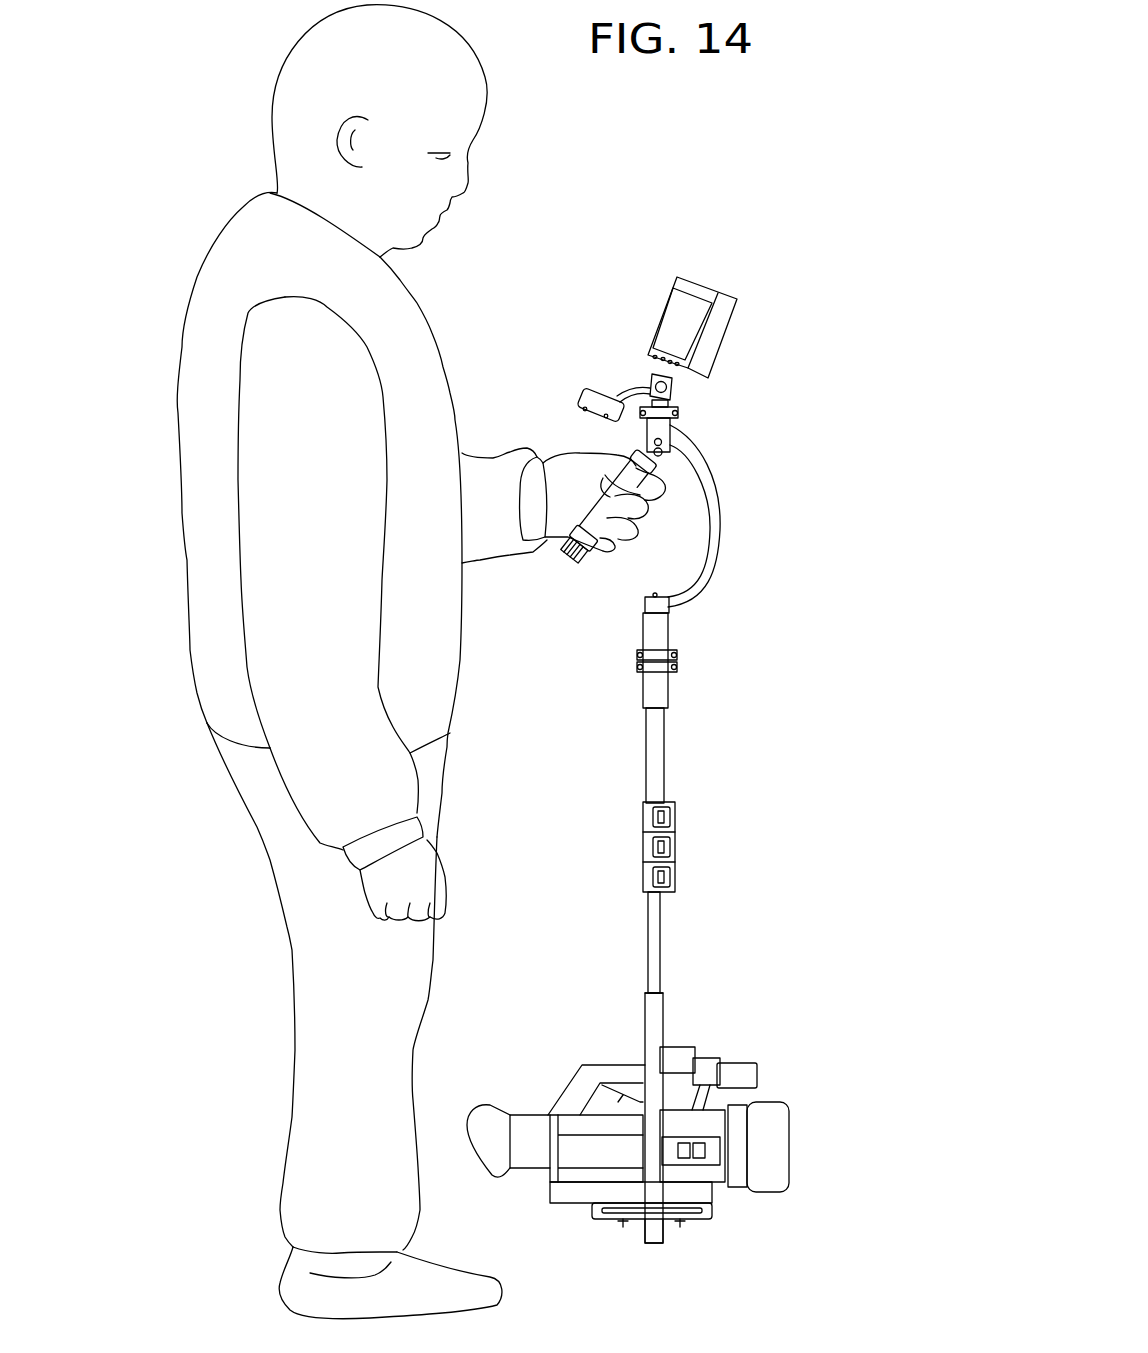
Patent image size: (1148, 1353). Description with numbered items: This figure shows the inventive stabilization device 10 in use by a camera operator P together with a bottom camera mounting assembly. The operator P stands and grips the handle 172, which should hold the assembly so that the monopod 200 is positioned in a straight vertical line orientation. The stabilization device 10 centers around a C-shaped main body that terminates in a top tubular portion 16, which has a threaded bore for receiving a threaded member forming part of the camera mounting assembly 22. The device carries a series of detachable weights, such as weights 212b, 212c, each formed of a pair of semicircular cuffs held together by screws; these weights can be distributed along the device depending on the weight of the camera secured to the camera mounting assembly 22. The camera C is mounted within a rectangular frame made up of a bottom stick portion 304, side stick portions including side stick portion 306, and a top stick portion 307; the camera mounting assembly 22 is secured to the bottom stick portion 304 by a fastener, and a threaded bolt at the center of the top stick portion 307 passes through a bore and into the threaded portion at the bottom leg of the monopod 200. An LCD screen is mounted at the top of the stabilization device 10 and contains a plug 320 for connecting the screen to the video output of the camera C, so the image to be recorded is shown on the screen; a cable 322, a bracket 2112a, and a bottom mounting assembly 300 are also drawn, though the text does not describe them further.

The camera operator P is at (235, 248).
The plug 320 is at (717, 333).
The monitor cable and connector 322 is at (583, 412).
The mounting bracket 2112a is at (681, 413).
The top tubular portion 16 is at (664, 427).
The stabilization device 10 is at (727, 512).
The handle 172 is at (605, 535).
The detachable weight 212b is at (677, 655).
The detachable weight 212c is at (673, 667).
The monopod 200 is at (675, 770).
The top stick portion 307 is at (663, 993).
The side stick portion 306 is at (650, 1020).
The camera mounting assembly 300 is at (677, 1023).
The bottom stick portion 304 is at (653, 1244).
The camera mounting assembly 22 is at (687, 1220).
The camera C is at (710, 1172).